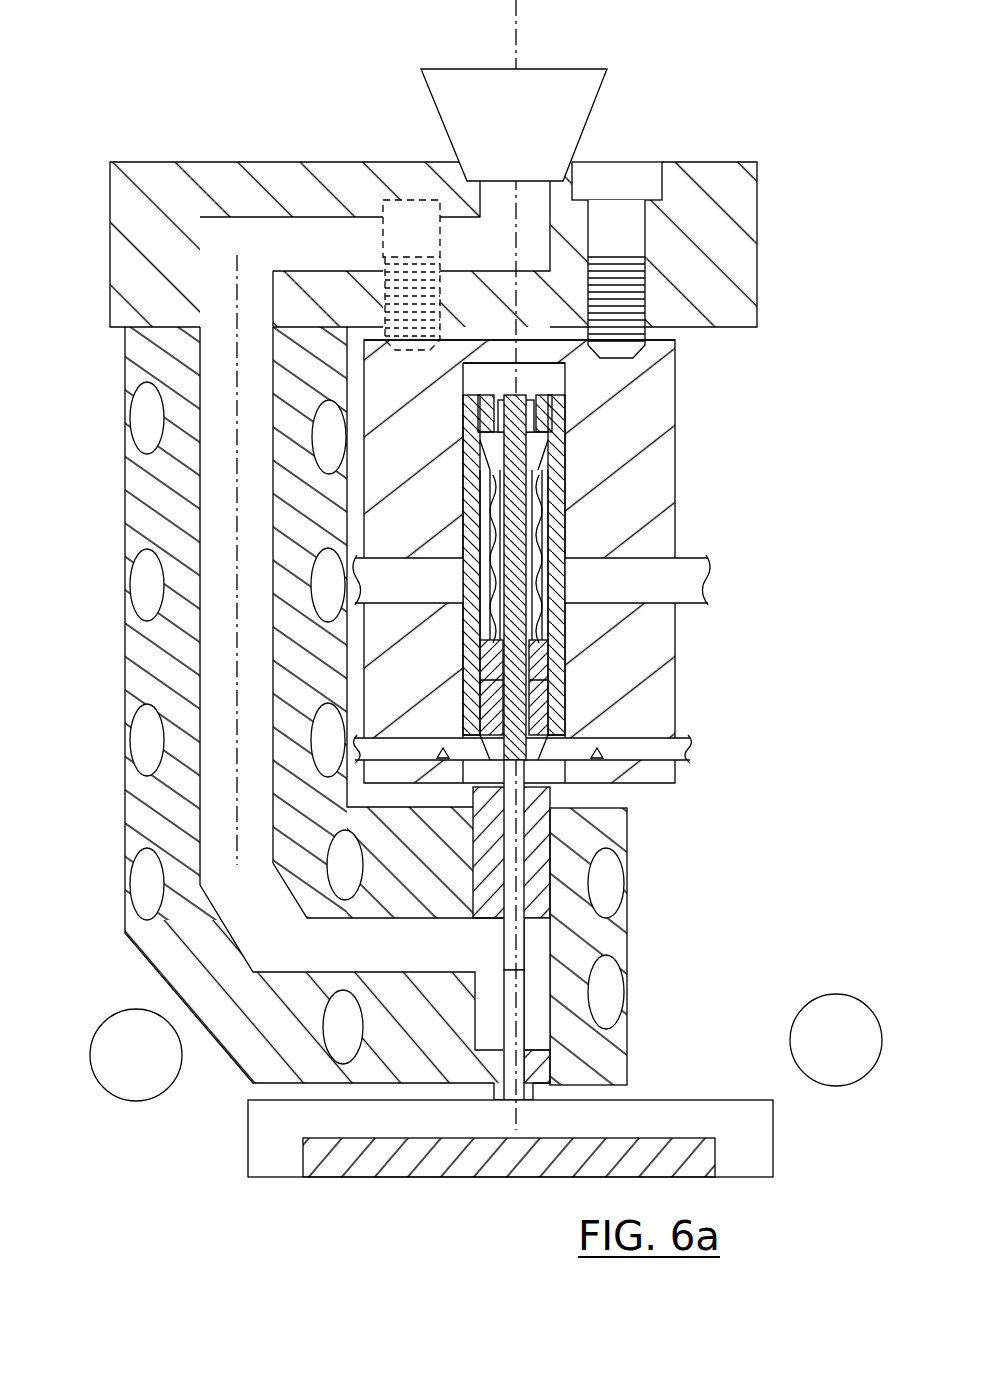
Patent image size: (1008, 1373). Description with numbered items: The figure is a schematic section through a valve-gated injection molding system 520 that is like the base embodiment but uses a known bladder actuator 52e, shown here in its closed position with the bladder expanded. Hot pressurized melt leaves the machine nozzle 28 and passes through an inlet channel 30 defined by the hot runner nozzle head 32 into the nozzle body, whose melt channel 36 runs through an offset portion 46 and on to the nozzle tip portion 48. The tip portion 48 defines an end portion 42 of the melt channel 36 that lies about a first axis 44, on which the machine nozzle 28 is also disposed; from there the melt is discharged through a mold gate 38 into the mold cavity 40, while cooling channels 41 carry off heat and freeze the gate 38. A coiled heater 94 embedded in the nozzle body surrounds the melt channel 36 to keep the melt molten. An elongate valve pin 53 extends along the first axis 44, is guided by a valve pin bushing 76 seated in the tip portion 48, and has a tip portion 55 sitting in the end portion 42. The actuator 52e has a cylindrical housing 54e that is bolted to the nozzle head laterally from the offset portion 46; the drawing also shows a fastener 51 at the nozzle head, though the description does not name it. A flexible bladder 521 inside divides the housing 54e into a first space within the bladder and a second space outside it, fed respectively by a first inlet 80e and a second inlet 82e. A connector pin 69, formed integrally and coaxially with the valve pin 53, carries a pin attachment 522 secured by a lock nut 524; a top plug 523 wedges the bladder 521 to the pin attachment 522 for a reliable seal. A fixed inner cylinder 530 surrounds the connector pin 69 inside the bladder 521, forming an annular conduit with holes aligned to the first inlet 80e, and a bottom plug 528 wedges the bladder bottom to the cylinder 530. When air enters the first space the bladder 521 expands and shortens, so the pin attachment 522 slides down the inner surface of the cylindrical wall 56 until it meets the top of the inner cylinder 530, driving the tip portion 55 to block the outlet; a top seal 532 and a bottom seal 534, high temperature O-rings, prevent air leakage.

The valve-gated injection molding system 520 is at (213, 104).
The first axis 44 is at (518, 32).
The machine nozzle 28 is at (567, 128).
The inlet channel 30 is at (498, 248).
The bolt 51 is at (622, 227).
The hot runner nozzle head 32 is at (140, 274).
The bladder actuator 52e is at (758, 382).
The cylindrical wall 56 is at (665, 357).
The lock nut 524 is at (537, 392).
The pin attachment 522 is at (557, 417).
The top seal 532 is at (555, 445).
The top plug 523 is at (548, 478).
The cylindrical housing 54e is at (663, 493).
The connector pin 69 is at (545, 528).
The second inlet 82e is at (712, 578).
The flexible bladder 521 is at (552, 620).
The bottom plug 528 is at (552, 655).
The bottom seal 534 is at (548, 676).
The inner cylinder 530 is at (552, 725).
The first inlet 80e is at (690, 750).
The valve pin 53 is at (548, 787).
The valve pin bushing 76 is at (535, 855).
The end portion 42 is at (538, 956).
The tip portion 55 is at (520, 1005).
The nozzle tip portion 48 is at (605, 1047).
The mold gate 38 is at (522, 1105).
The mold cavity 40 is at (270, 1135).
The cooling channels 41 is at (855, 1030).
The offset portion 46 is at (148, 512).
The melt channel 36 is at (208, 776).
The coiled heater 94 is at (138, 868).